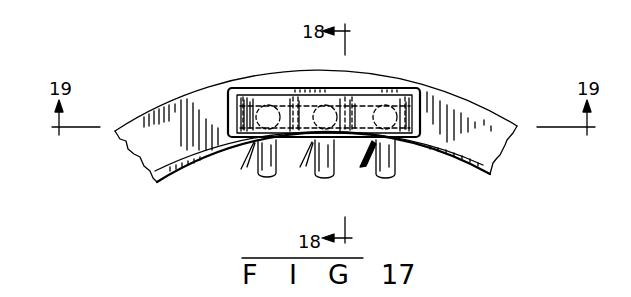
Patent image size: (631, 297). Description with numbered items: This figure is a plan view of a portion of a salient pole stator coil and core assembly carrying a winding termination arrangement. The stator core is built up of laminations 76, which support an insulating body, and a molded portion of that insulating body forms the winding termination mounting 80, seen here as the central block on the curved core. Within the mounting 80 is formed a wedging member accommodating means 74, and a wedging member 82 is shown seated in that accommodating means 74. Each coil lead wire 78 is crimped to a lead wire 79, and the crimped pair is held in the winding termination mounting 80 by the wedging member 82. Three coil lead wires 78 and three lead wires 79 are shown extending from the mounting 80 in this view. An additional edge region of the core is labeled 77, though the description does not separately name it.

The wedging member accommodating means 74 is at (365, 110).
The laminations 76 is at (185, 97).
The inner flange 77 is at (153, 178).
The coil lead wire 78 is at (241, 164).
The lead wire 79 is at (257, 170).
The winding termination mounting 80 is at (424, 86).
The wedging member 82 is at (272, 102).